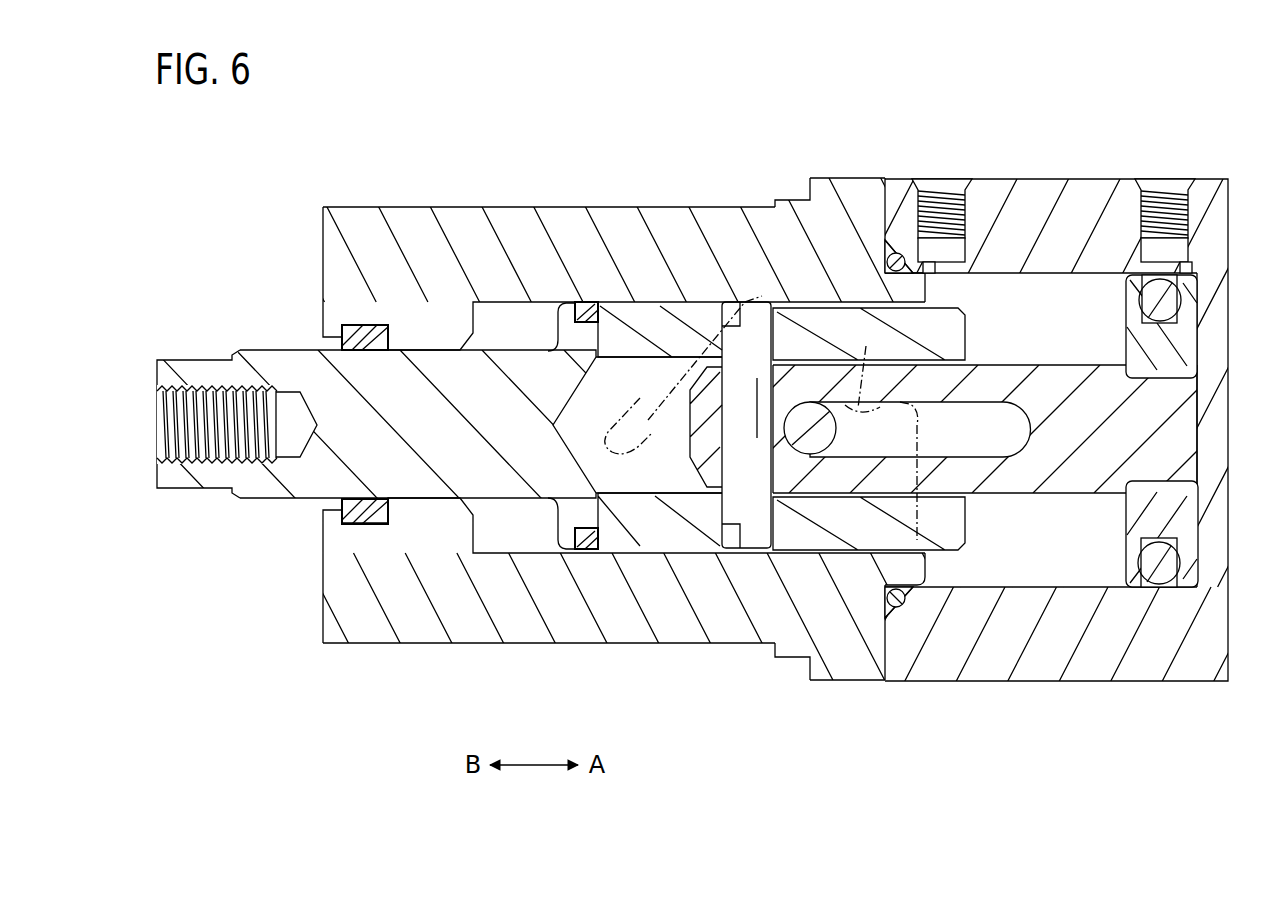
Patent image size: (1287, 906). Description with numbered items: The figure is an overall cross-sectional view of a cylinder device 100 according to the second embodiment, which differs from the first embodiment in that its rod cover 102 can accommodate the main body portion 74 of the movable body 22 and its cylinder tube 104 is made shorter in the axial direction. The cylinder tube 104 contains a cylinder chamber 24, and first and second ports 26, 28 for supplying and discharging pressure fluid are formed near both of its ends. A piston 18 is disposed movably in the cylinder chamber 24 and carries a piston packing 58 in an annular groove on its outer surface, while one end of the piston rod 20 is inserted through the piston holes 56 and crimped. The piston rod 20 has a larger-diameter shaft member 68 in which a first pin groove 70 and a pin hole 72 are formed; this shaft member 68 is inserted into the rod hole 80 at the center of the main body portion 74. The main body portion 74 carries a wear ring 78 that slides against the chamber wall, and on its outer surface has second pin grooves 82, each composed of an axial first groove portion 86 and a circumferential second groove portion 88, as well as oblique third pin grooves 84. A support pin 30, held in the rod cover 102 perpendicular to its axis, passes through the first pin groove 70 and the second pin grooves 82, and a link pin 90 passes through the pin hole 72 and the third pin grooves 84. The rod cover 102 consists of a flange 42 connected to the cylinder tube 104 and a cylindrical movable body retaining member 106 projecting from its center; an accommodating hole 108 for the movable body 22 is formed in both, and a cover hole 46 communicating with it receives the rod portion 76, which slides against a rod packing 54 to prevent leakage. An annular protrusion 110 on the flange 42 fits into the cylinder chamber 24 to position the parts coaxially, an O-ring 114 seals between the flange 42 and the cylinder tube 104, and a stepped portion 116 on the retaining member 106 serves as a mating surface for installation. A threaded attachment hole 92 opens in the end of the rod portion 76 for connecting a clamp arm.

The piston 18 is at (1122, 340).
The piston rod 20 is at (1080, 498).
The movable body 22 is at (655, 532).
The cylinder chamber 24 is at (1022, 560).
The first port 26 is at (1162, 186).
The second port 28 is at (942, 186).
The support pin 30 is at (773, 477).
The flange 42 is at (843, 190).
The cover hole 46 is at (405, 485).
The rod packing 54 is at (362, 522).
The piston holes 56 is at (1153, 468).
The piston packing 58 is at (1158, 302).
The shaft member 68 is at (1030, 482).
The first pin groove 70 is at (1000, 420).
The pin hole 72 is at (745, 400).
The main body portion 74 is at (818, 530).
The rod portion 76 is at (262, 490).
The wear ring 78 is at (585, 550).
The rod hole 80 is at (640, 372).
The second pin grooves 82 is at (890, 440).
The third pin grooves 84 is at (745, 340).
The first groove portion 86 is at (862, 365).
The second groove portion 88 is at (928, 548).
The link pin 90 is at (757, 525).
The attachment hole 92 is at (182, 425).
The cylinder device 100 is at (257, 140).
The rod cover 102 is at (300, 262).
The cylinder tube 104 is at (1043, 175).
The movable body retaining member 106 is at (568, 222).
The accommodating hole 108 is at (518, 302).
The protrusion 110 is at (918, 296).
The O-ring 114 is at (900, 606).
The stepped portion 116 is at (800, 203).